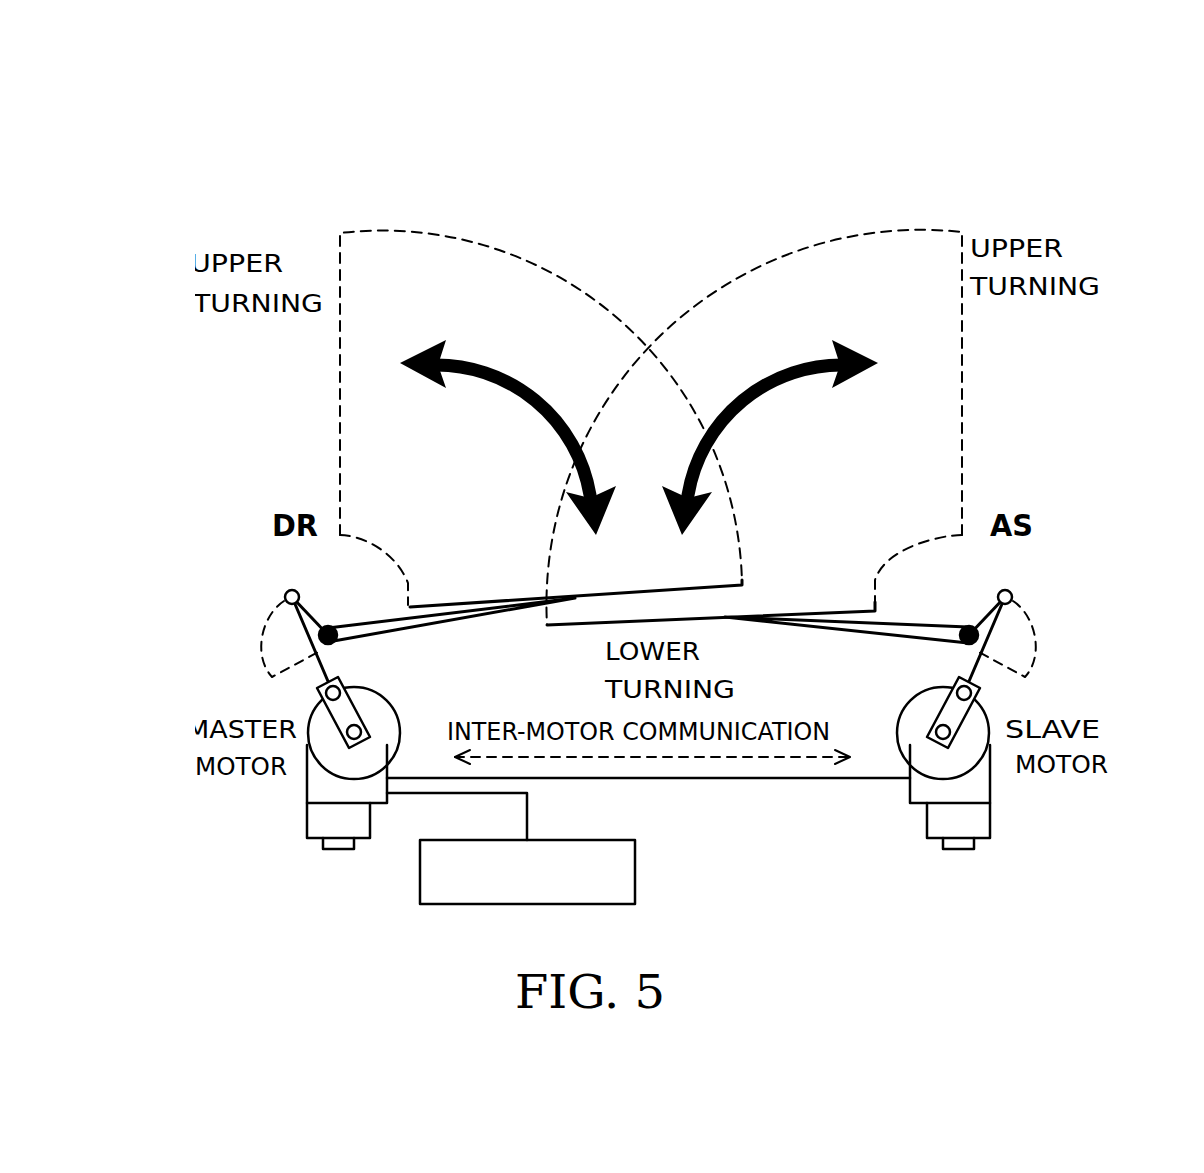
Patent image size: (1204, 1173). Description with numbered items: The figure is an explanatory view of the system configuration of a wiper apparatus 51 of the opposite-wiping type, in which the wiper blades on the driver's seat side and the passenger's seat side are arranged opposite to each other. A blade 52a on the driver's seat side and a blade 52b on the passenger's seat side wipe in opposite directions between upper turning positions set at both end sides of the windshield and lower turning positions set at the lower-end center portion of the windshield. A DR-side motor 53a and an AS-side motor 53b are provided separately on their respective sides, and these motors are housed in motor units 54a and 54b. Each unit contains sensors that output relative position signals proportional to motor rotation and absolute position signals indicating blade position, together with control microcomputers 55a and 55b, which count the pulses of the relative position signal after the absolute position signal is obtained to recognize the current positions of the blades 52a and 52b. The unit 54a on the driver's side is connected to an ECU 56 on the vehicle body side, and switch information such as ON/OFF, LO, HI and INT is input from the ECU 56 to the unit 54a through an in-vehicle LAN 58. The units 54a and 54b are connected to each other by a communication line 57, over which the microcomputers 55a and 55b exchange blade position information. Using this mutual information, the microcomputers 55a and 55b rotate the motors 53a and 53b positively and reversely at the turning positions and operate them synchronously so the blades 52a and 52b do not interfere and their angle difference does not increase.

The wiper apparatus 51 is at (686, 245).
The blade on the driver's seat side 52a is at (475, 605).
The blade on the passenger's seat side 52b is at (808, 611).
The DR-side motor 53a is at (315, 813).
The AS-side motor 53b is at (983, 818).
The motor unit 54a is at (360, 827).
The motor unit 54b is at (937, 815).
The control microcomputer 55a is at (321, 778).
The control microcomputer 55b is at (977, 783).
The ECU 56 is at (635, 873).
The communication line 57 is at (793, 782).
The in-vehicle LAN 58 is at (527, 817).